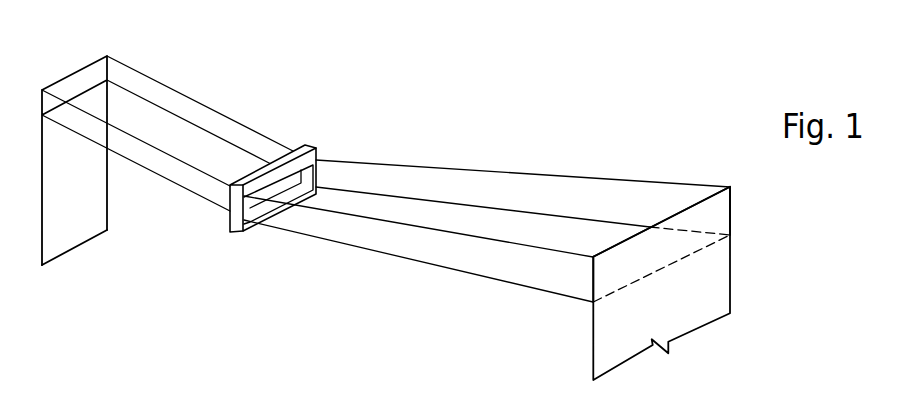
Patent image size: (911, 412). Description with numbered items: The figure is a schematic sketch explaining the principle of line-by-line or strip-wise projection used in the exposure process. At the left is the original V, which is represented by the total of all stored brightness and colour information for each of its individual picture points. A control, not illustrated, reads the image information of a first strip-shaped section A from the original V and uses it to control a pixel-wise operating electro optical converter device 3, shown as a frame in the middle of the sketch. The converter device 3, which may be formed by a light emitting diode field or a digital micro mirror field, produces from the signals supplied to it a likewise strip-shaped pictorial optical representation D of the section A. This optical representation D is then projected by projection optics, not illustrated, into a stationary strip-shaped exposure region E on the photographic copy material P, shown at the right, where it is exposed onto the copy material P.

The strip-shaped section A is at (78, 83).
The original V is at (67, 218).
The pictorial optical representation D is at (312, 201).
The electro optical converter device 3 is at (238, 227).
The strip-shaped exposure region E is at (611, 271).
The photographic copy material P is at (684, 310).